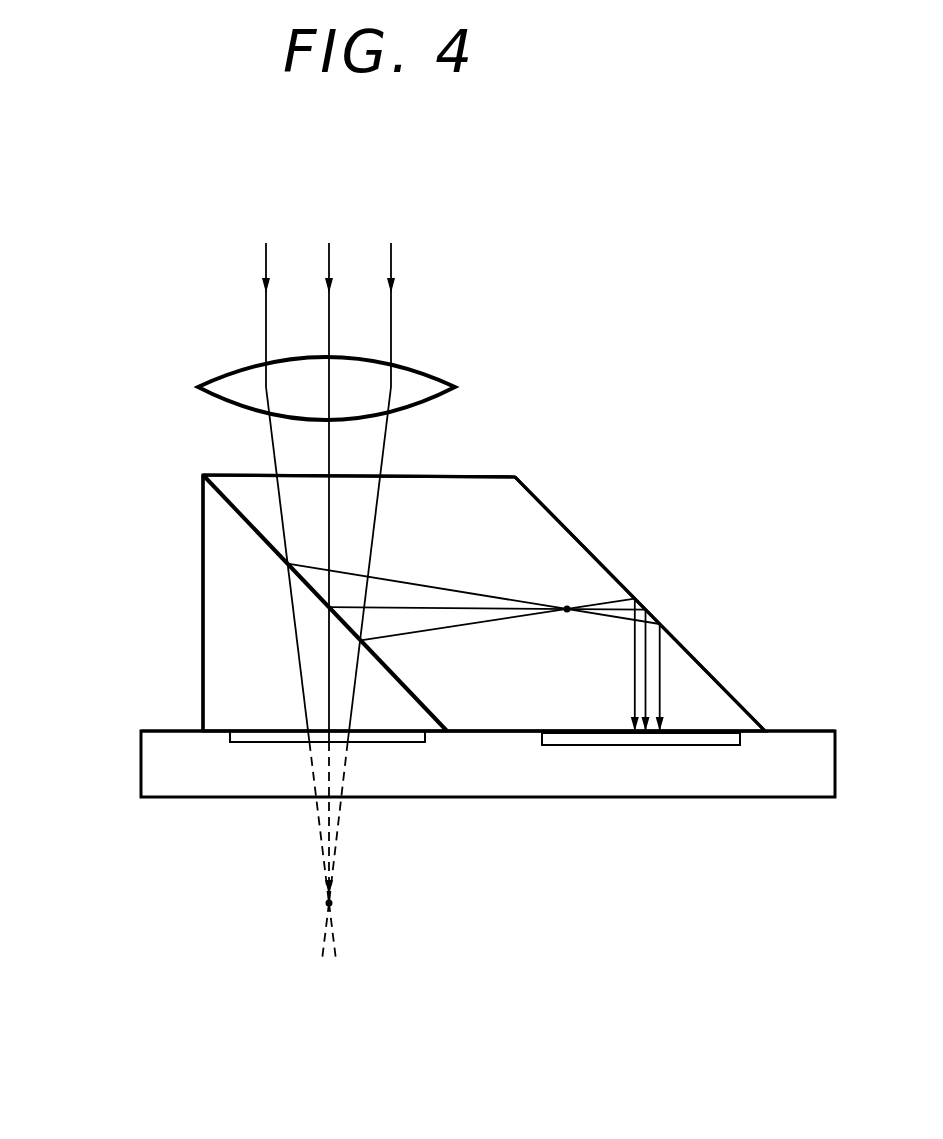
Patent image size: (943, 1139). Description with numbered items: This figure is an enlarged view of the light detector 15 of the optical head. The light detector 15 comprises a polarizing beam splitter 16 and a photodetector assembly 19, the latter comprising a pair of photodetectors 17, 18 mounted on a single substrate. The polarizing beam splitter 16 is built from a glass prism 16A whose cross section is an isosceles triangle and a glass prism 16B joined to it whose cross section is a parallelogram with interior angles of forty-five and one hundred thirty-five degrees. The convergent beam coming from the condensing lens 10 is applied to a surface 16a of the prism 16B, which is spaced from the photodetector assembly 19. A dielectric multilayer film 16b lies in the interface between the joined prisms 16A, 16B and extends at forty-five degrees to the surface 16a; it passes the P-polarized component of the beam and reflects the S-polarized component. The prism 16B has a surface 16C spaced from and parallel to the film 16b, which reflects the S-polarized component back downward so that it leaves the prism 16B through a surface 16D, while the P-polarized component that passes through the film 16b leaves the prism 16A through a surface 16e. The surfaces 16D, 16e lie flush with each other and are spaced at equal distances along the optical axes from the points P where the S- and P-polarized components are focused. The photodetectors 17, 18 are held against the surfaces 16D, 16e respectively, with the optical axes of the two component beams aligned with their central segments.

The condensing lens 10 is at (430, 370).
The light detector 15 is at (702, 555).
The polarizing beam splitter 16 is at (563, 548).
The surface 16a is at (227, 474).
The dielectric multilayer film 16b is at (237, 508).
The glass prism 16A is at (218, 582).
The glass prism 16B is at (495, 477).
The surface 16C is at (630, 592).
The surface 16D is at (727, 740).
The surface 16e is at (250, 742).
The photodetector 17 is at (620, 742).
The photodetector 18 is at (283, 743).
The photodetector assembly 19 is at (477, 797).
The focal points P is at (567, 611).